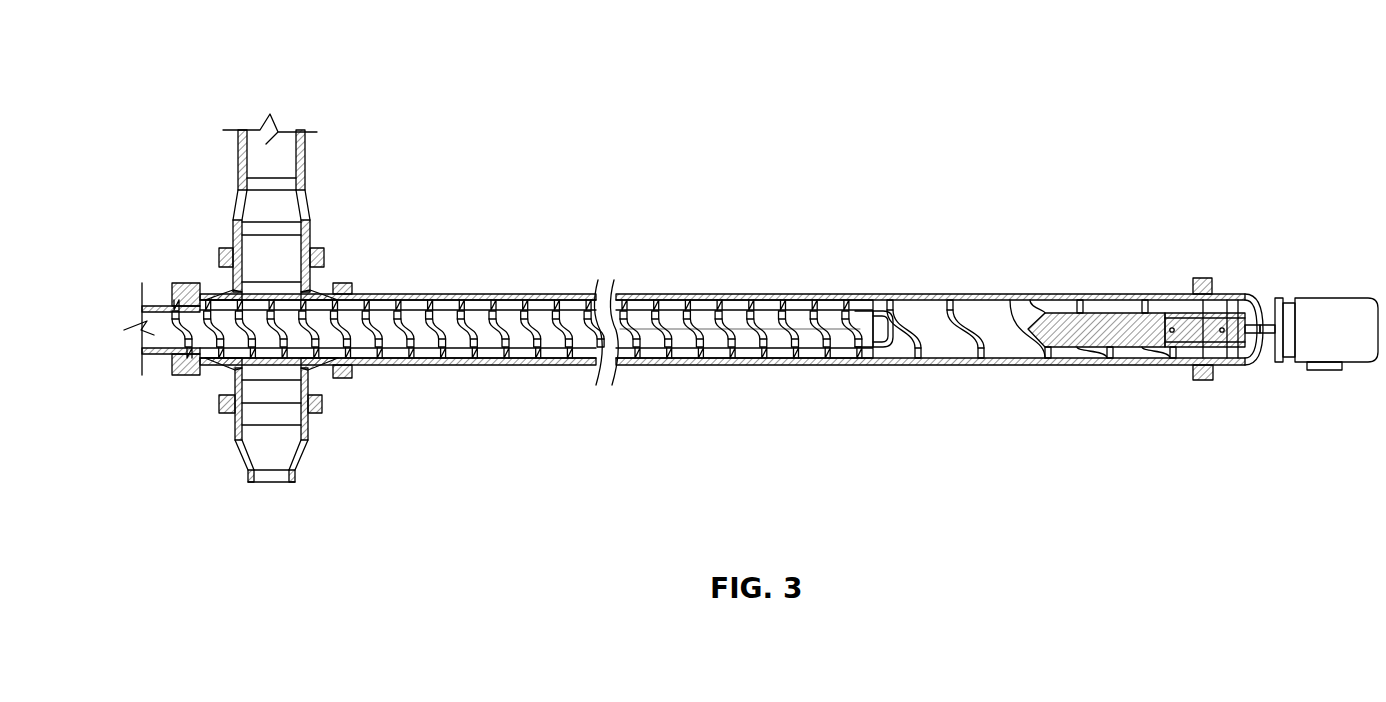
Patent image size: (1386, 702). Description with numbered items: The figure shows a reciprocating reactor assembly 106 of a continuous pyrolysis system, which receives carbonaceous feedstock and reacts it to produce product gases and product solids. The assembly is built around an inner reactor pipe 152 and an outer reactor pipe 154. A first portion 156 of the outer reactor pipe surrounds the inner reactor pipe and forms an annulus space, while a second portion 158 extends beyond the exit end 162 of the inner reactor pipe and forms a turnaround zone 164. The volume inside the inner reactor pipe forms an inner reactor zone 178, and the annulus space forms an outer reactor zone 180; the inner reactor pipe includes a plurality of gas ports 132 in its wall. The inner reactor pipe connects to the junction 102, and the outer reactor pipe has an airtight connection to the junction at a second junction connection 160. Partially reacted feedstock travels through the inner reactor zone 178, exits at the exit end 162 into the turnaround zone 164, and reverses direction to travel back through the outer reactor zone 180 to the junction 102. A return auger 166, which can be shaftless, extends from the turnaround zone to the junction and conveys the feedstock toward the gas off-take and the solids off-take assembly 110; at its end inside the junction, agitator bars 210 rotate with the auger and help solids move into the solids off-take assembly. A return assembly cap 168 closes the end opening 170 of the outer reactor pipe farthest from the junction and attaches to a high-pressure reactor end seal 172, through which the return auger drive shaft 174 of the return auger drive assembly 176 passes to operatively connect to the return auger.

The reciprocating reactor assembly 106 is at (202, 45).
The junction 102 is at (313, 289).
The solids off-take assembly 110 is at (318, 430).
The agitator bars 210 is at (258, 303).
The second junction connection 160 is at (352, 290).
The first portion of the outer reactor pipe 156 is at (473, 295).
The gas ports 132 is at (713, 303).
The outer reactor zone 180 is at (681, 302).
The inner reactor zone 178 is at (744, 341).
The inner reactor pipe 152 is at (848, 303).
The exit end 162 is at (880, 307).
The outer reactor pipe 154 is at (982, 293).
The turnaround zone 164 is at (939, 344).
The return auger 166 is at (976, 368).
The second portion of the outer reactor pipe 158 is at (1115, 294).
The return auger drive shaft 174 is at (1072, 366).
The return assembly cap 168 is at (1262, 300).
The high-pressure reactor end seal 172 is at (1212, 287).
The end opening 170 is at (1192, 372).
The return auger drive assembly 176 is at (1340, 298).